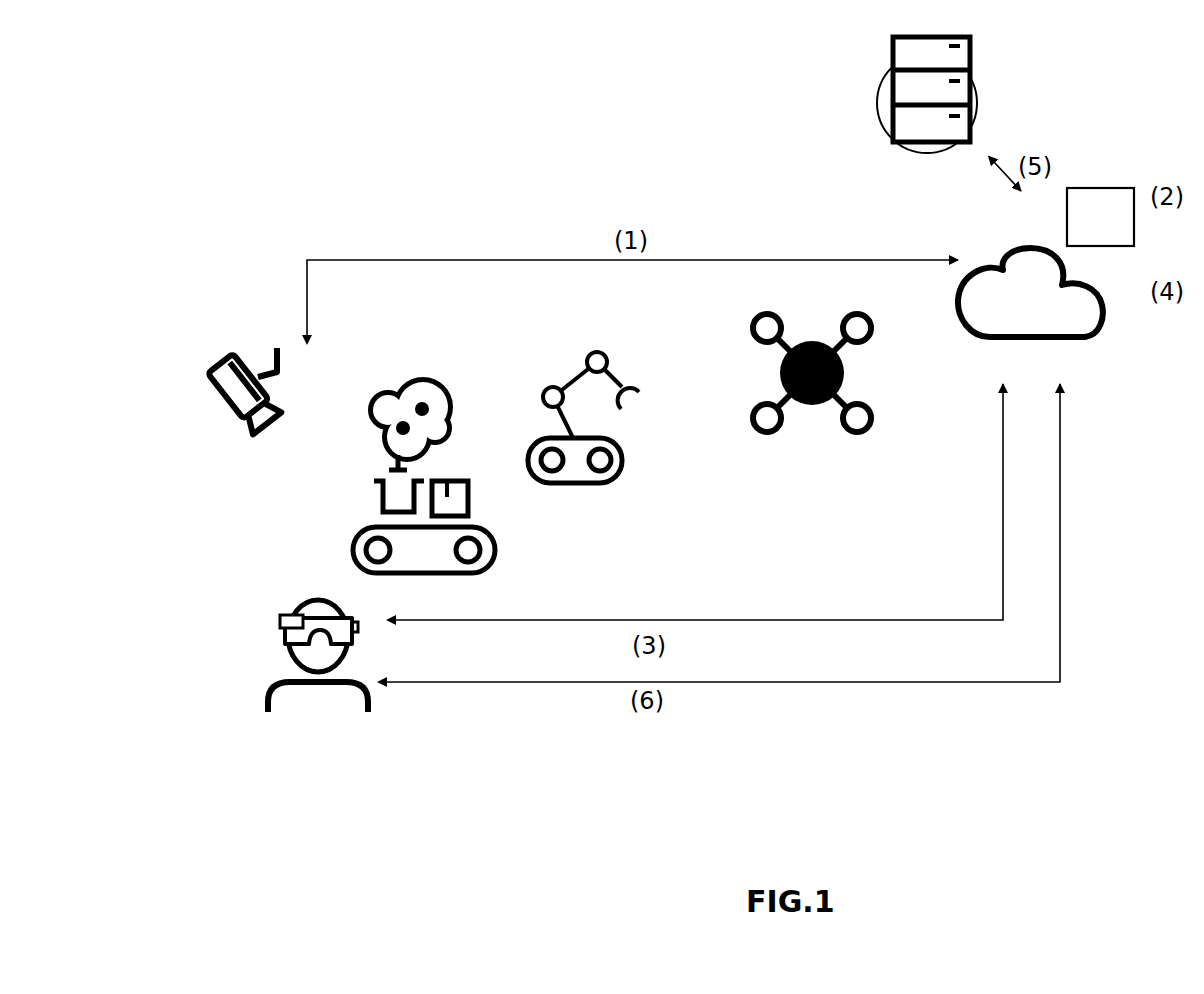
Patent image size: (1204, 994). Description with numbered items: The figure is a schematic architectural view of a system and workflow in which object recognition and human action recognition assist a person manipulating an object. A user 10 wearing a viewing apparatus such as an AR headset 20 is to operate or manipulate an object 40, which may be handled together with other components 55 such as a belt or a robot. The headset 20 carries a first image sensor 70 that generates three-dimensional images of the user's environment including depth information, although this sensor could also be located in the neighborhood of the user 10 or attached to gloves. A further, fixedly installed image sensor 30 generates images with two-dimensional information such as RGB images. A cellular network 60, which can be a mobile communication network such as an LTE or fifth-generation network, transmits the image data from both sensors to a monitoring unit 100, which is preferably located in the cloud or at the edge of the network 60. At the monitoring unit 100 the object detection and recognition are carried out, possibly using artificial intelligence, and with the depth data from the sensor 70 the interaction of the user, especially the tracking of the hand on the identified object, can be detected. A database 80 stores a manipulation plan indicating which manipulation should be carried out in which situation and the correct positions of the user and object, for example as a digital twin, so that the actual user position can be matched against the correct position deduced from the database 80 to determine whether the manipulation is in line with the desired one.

The user 10 is at (318, 681).
The AR headset 20 is at (283, 637).
The image sensor 30 is at (233, 423).
The object 40 is at (438, 380).
The component 55 is at (627, 465).
The cellular network 60 is at (875, 428).
The first image sensor 70 is at (296, 612).
The database 80 is at (970, 70).
The monitoring unit 100 is at (1100, 217).